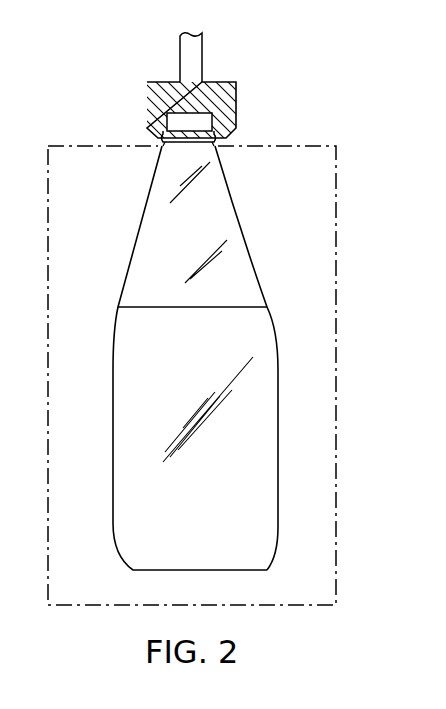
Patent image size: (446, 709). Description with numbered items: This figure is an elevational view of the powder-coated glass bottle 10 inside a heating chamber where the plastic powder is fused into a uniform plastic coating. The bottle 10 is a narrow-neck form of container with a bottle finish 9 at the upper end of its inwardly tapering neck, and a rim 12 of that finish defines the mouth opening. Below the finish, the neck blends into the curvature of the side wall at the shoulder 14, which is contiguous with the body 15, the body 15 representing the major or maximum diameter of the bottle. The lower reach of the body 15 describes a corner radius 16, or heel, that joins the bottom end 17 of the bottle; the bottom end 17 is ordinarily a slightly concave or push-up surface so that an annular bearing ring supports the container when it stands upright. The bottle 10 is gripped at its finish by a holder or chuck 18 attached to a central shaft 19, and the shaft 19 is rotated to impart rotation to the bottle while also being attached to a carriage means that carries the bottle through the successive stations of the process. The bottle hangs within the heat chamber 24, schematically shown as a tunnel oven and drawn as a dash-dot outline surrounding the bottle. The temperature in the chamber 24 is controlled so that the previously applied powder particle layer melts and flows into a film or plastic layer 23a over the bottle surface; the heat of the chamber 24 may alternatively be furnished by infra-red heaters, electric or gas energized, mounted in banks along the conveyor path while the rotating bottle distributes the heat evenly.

The bottle finish 9 is at (187, 127).
The glass bottle 10 is at (212, 391).
The rim 12 is at (205, 117).
The shoulder 14 is at (280, 377).
The body 15 is at (282, 475).
The corner radius 16 is at (279, 556).
The bottom end 17 is at (224, 572).
The chuck 18 is at (238, 92).
The central shaft 19 is at (195, 57).
The plastic layer 23a is at (233, 222).
The heat chamber 24 is at (229, 375).